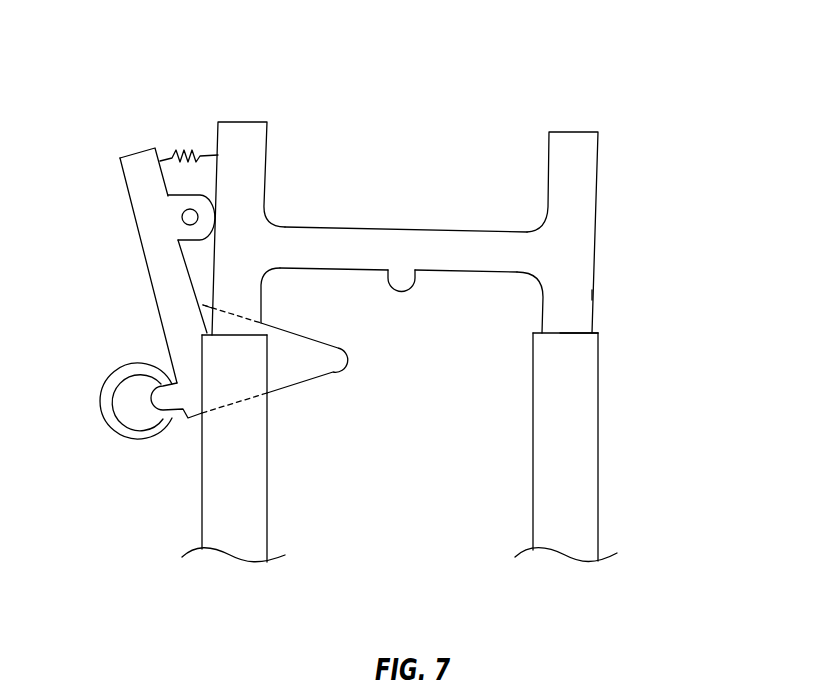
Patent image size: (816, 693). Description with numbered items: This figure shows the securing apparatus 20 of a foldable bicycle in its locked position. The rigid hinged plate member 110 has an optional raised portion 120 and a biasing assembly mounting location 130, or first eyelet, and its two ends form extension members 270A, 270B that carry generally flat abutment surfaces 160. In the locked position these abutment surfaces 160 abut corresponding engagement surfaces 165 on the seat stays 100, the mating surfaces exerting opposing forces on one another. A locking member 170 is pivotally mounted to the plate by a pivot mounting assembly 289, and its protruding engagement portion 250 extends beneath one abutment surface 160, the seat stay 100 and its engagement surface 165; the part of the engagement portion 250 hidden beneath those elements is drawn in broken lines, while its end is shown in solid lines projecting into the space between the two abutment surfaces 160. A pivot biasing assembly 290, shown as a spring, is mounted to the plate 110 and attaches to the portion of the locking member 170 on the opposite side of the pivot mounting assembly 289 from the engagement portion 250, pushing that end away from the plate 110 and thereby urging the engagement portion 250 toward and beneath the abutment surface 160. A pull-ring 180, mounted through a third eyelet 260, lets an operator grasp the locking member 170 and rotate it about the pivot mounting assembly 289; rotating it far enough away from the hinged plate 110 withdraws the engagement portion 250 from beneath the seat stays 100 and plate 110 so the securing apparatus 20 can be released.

The securing apparatus 20 is at (263, 40).
The seat stay 100 is at (268, 470).
The hinged plate member 110 is at (606, 175).
The raised portion 120 is at (348, 226).
The biasing assembly mounting location 130 is at (402, 292).
The abutment surface 160 is at (572, 334).
The engagement surface 165 is at (262, 332).
The locking member 170 is at (146, 299).
The pull-ring 180 is at (105, 412).
The engagement portion 250 is at (323, 380).
The third eyelet 260 is at (158, 405).
The extension member 270A is at (228, 312).
The extension member 270B is at (580, 296).
The pivot mounting assembly 289 is at (190, 196).
The pivot biasing assembly 290 is at (185, 150).